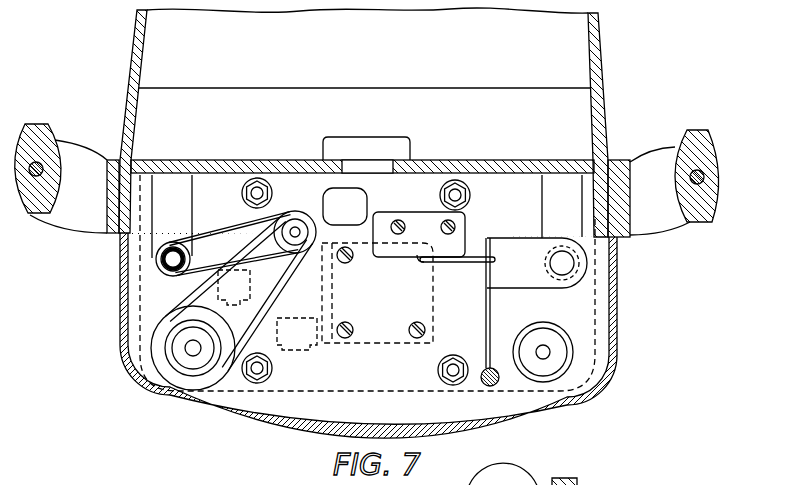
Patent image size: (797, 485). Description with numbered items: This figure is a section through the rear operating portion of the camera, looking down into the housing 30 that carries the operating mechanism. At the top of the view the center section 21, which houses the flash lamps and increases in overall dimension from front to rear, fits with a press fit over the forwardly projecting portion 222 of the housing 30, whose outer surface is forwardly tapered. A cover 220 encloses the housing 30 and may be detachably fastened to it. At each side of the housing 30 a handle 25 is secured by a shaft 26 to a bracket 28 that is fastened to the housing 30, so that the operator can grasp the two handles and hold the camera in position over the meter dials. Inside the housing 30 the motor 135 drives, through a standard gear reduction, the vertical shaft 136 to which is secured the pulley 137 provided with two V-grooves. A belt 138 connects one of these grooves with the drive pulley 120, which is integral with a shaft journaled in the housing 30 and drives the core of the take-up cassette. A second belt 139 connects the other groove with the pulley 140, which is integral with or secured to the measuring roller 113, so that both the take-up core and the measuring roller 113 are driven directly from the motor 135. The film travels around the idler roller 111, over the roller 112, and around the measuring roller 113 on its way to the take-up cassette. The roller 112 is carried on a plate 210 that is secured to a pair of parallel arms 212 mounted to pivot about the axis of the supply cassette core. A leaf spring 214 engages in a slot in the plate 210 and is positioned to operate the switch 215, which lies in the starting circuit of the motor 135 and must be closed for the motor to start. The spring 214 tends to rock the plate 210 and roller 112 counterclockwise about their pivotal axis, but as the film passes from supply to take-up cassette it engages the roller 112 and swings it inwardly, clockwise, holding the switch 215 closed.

The center section 21 is at (138, 38).
The handle 25 is at (38, 133).
The shaft 26 is at (43, 170).
The bracket 28 is at (71, 216).
The housing 30 is at (247, 162).
The idler roller 111 is at (552, 342).
The roller 112 is at (488, 387).
The measuring roller 113 is at (201, 384).
The drive pulley 120 is at (157, 262).
The motor 135 is at (373, 332).
The vertical shaft 136 is at (300, 233).
The pulley 137 is at (293, 216).
The belt 138 is at (214, 236).
The belt 139 is at (195, 300).
The pulley 140 is at (178, 383).
The plate 210 is at (497, 323).
The arm 212 is at (528, 277).
The leaf spring 214 is at (472, 263).
The switch 215 is at (395, 249).
The cover 220 is at (126, 331).
The forwardly projecting portion 222 is at (548, 103).